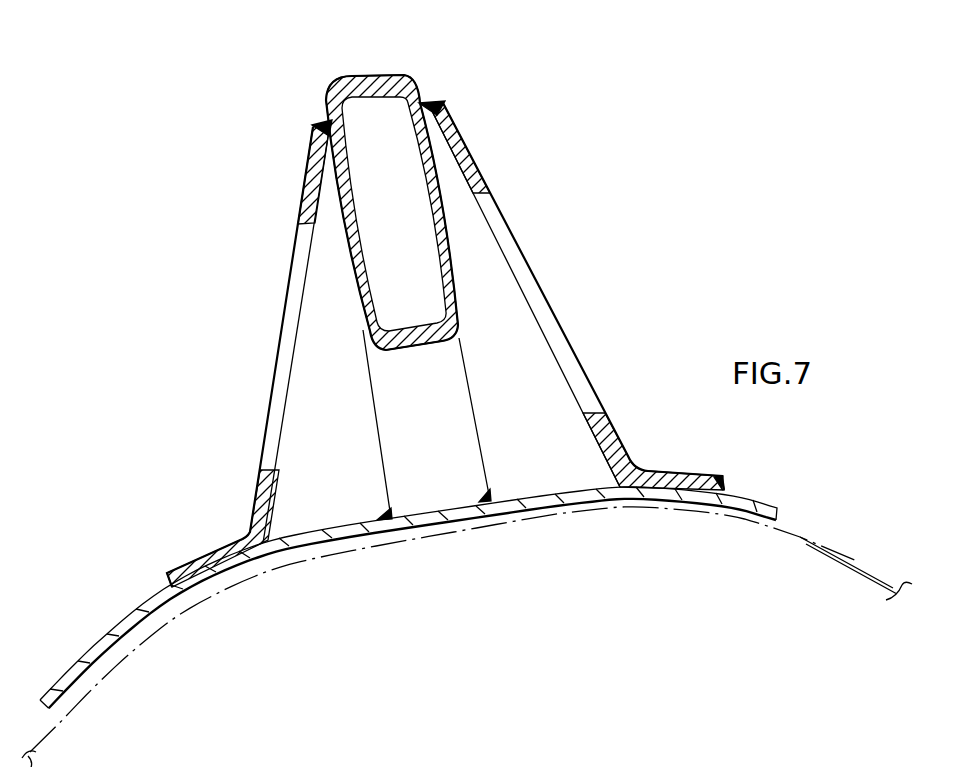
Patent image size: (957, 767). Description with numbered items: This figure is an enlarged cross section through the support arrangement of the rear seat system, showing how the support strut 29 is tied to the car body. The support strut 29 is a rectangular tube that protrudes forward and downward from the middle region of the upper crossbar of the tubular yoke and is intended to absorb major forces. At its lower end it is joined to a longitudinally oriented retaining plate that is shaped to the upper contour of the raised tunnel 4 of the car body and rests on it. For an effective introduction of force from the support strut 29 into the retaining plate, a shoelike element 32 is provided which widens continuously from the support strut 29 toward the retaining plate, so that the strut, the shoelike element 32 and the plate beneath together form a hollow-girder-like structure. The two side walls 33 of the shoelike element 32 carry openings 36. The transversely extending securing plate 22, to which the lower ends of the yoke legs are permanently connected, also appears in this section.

The tunnel 4 is at (805, 551).
The securing plate 22 is at (578, 493).
The support strut 29 is at (388, 70).
The shoelike element 32 is at (466, 132).
The side walls 33 is at (312, 180).
The openings 36 is at (292, 296).